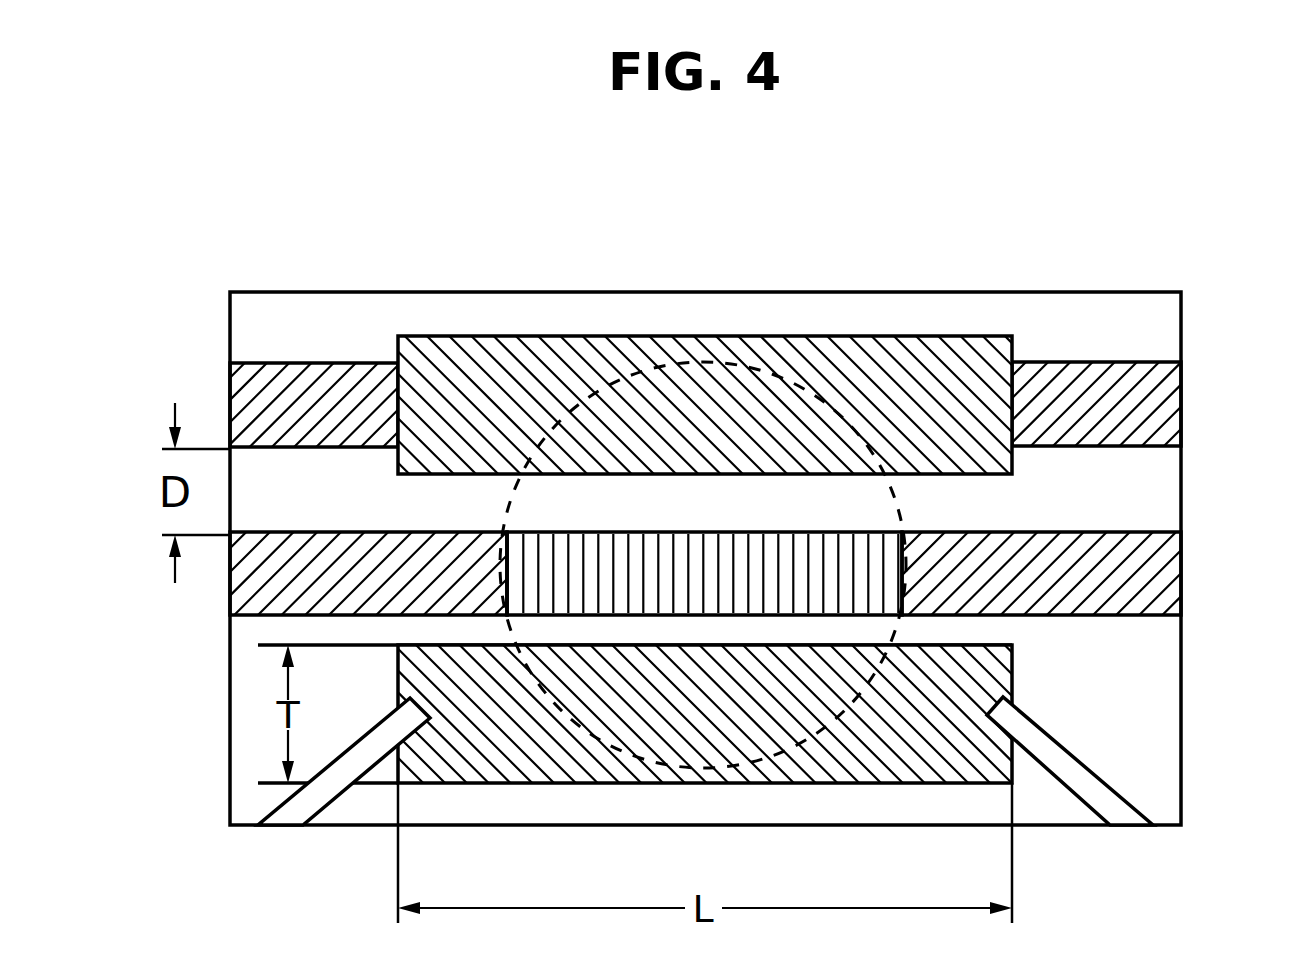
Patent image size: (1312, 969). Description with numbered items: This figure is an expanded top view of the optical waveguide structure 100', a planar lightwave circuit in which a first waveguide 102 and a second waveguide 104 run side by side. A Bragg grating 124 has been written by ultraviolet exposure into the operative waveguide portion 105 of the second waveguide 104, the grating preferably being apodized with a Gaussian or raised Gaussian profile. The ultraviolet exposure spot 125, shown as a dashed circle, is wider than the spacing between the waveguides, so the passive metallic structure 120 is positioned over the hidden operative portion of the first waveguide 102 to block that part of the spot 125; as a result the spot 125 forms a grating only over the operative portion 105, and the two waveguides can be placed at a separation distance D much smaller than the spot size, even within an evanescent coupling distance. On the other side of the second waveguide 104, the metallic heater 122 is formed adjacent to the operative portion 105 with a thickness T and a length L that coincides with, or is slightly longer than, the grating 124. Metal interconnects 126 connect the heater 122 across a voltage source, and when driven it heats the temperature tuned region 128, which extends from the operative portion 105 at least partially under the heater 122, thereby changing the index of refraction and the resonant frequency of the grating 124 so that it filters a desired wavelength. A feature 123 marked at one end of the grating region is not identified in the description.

The optical waveguide structure 100' is at (705, 492).
The first waveguide 102 is at (1163, 421).
The second waveguide 104 is at (267, 608).
The operative waveguide portion 105 is at (590, 550).
The passive metallic structure 120 is at (893, 347).
The metallic heater 122 is at (890, 770).
The boundary of via region 123 is at (497, 533).
The Bragg grating 124 is at (718, 550).
The UV exposure spot 125 is at (904, 500).
The metal interconnects 126 is at (325, 808).
The temperature tuned region 128 is at (1000, 632).